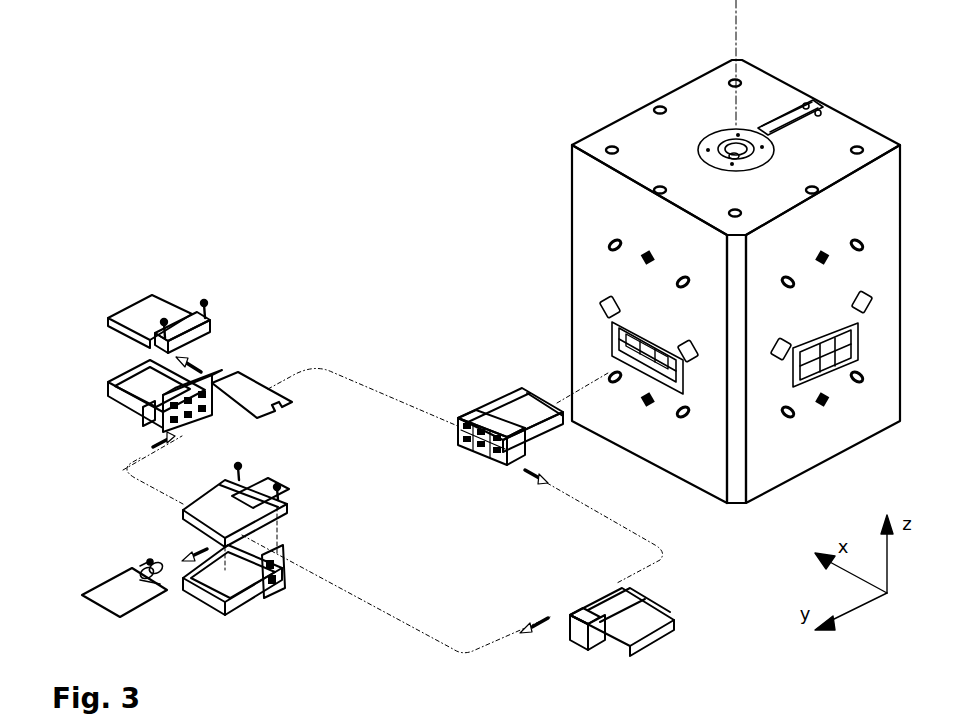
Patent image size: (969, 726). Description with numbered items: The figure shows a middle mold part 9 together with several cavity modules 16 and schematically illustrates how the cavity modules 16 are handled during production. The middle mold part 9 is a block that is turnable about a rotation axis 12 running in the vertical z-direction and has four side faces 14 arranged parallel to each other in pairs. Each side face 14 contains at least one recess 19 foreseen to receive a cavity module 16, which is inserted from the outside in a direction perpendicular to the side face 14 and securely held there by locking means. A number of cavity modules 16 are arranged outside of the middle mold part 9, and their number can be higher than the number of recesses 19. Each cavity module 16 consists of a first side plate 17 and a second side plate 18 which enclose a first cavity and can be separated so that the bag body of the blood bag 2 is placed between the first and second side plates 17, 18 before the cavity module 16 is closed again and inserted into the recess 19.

The blood bag 2 is at (127, 598).
The middle mold part 9 is at (679, 260).
The rotation axis 12 is at (713, 108).
The side face 14 is at (468, 206).
The cavity module 16 is at (517, 396).
The first side plate 17 is at (159, 346).
The second side plate 18 is at (157, 432).
The recess 19 is at (511, 193).